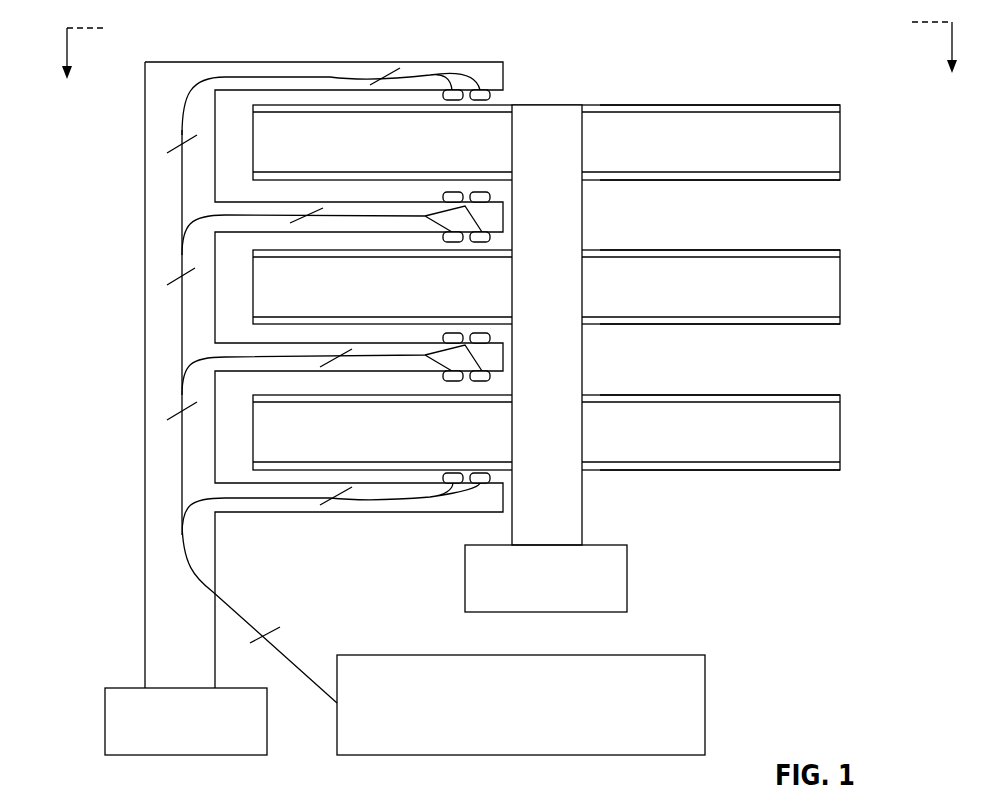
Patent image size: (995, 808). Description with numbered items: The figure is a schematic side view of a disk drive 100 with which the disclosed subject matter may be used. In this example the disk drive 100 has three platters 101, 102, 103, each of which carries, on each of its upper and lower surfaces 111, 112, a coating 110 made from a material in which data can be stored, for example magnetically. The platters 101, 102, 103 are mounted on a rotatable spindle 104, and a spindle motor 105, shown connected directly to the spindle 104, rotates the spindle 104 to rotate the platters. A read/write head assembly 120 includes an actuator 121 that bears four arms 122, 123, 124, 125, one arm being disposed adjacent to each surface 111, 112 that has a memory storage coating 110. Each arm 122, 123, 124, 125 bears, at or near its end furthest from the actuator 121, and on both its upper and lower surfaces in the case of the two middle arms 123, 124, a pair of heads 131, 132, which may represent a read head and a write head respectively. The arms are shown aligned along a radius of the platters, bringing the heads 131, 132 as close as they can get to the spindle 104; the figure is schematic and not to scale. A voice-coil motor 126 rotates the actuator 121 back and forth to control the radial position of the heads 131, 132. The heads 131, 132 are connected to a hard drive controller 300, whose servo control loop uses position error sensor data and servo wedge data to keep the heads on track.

The disk drive 100 is at (190, 40).
The platter 101 is at (841, 139).
The platter 102 is at (841, 284).
The platter 103 is at (841, 429).
The spindle 104 is at (557, 113).
The spindle motor 105 is at (627, 580).
The coating 110 is at (842, 106).
The upper surface 111 is at (664, 104).
The lower surface 112 is at (663, 181).
The read/write head assembly 120 is at (134, 194).
The actuator 121 is at (145, 298).
The arm 122 is at (323, 60).
The arm 123 is at (340, 202).
The arm 124 is at (340, 343).
The arm 125 is at (340, 483).
The voice-coil motor 126 is at (141, 688).
The read head 131 is at (480, 101).
The write head 132 is at (453, 101).
The hard drive controller 300 is at (415, 655).